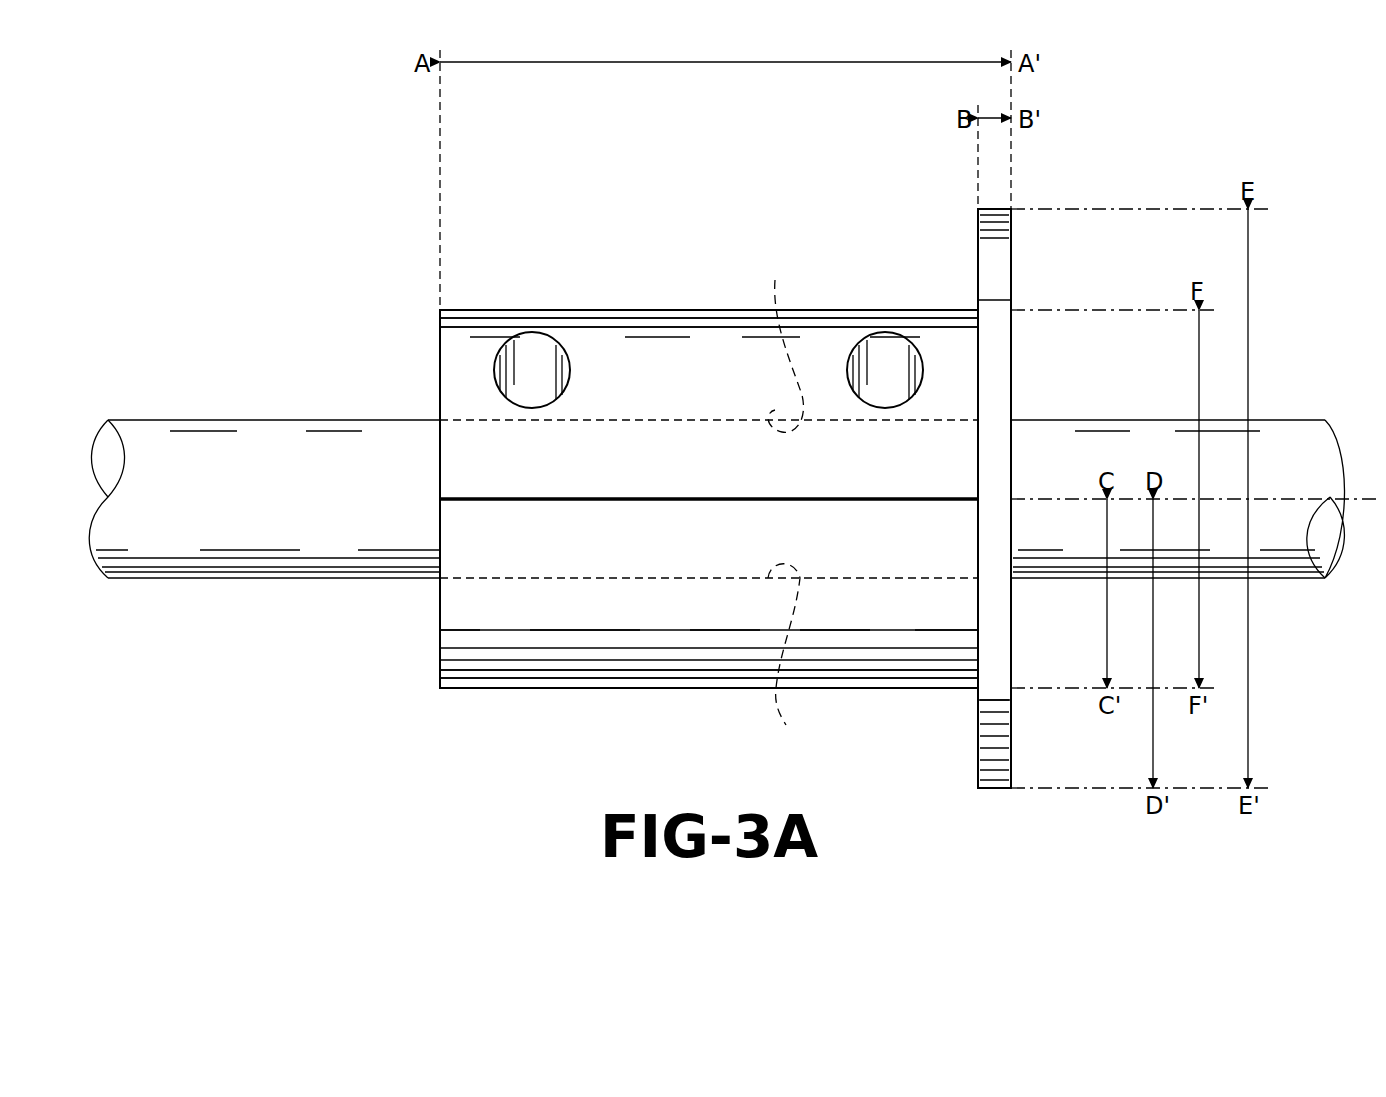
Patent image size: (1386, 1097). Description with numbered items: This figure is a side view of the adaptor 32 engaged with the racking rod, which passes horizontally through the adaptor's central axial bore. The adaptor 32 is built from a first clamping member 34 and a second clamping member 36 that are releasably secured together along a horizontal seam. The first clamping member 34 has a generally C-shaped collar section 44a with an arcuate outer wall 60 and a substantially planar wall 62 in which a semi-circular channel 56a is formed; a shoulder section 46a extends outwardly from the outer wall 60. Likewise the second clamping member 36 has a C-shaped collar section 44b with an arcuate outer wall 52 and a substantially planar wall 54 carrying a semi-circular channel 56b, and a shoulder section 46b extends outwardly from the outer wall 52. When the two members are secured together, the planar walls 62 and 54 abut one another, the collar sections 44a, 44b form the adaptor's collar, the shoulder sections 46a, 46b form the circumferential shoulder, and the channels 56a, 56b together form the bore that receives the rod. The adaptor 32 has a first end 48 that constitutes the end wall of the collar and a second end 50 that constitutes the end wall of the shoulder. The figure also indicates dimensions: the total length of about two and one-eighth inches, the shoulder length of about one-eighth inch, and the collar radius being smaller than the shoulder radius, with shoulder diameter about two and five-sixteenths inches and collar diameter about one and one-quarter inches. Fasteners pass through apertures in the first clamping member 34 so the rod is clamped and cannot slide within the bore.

The adaptor 32 is at (836, 268).
The first clamping member 34 is at (660, 308).
The second clamping member 36 is at (500, 692).
The collar section 44a is at (606, 314).
The collar section 44b is at (628, 680).
The shoulder section 46a is at (1014, 260).
The shoulder section 46b is at (1014, 748).
The first end 48 is at (438, 640).
The second end 50 is at (1014, 365).
The arcuate outer wall 52 is at (700, 690).
The planar wall 54 is at (610, 497).
The semi-circular channel 56a is at (782, 338).
The semi-circular channel 56b is at (785, 661).
The arcuate outer wall 60 is at (712, 308).
The planar wall 62 is at (566, 500).